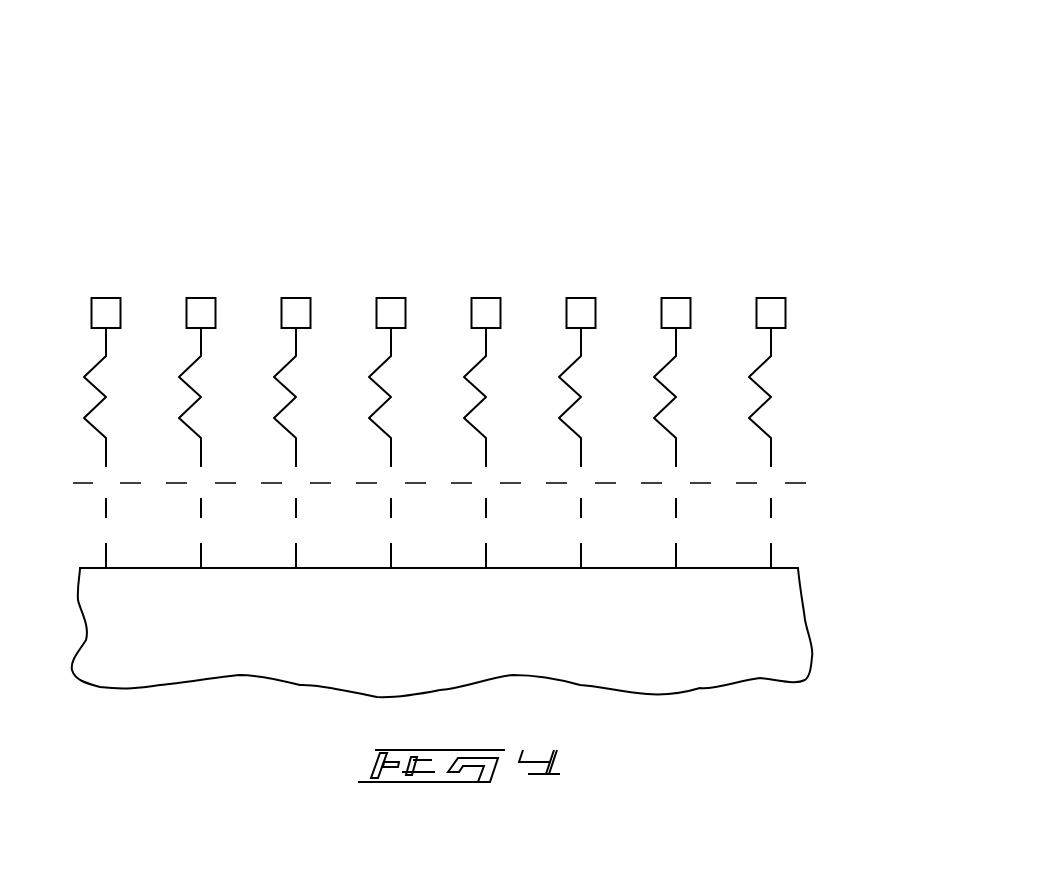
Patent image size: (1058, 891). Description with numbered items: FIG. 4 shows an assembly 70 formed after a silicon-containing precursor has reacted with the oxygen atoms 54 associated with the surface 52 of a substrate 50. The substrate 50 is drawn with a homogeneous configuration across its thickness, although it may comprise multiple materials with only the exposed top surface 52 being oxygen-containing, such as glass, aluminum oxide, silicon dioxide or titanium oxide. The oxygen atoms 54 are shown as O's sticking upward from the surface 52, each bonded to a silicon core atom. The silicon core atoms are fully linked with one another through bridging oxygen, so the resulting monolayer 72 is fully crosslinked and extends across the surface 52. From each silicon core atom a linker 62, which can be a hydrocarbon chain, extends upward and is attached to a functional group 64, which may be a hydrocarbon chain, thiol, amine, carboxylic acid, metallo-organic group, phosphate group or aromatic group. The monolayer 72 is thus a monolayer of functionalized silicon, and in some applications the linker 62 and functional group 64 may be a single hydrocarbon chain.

The substrate 50 is at (756, 650).
The surface 52 is at (790, 558).
The oxygen atoms 54 is at (100, 526).
The linker 62 is at (432, 416).
The functional group 64 is at (108, 304).
The assembly 70 is at (463, 362).
The monolayer 72 is at (463, 416).